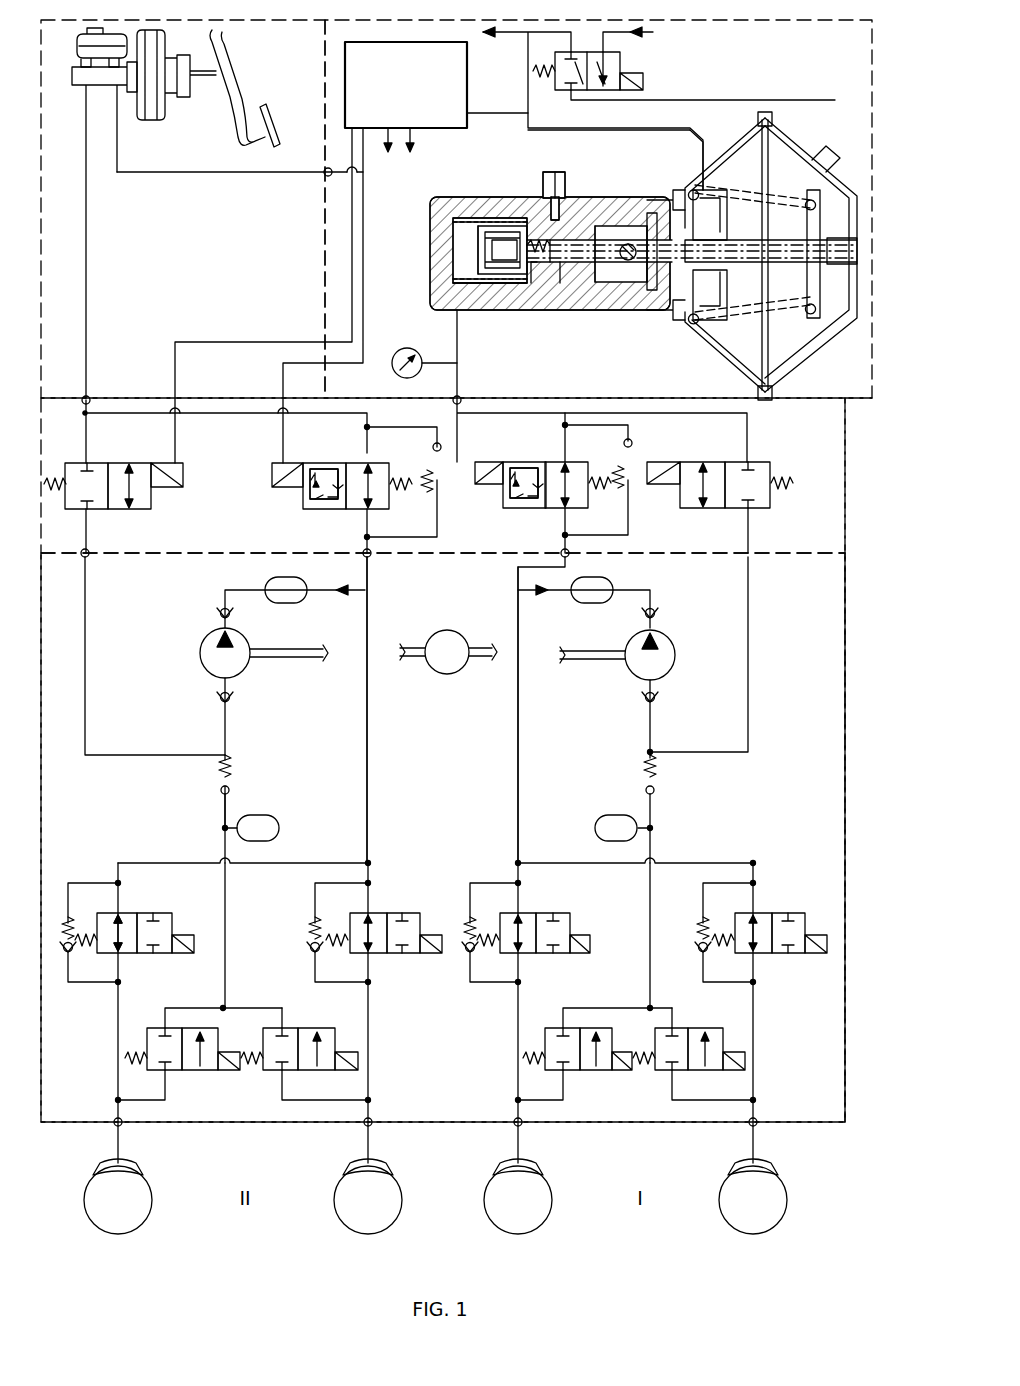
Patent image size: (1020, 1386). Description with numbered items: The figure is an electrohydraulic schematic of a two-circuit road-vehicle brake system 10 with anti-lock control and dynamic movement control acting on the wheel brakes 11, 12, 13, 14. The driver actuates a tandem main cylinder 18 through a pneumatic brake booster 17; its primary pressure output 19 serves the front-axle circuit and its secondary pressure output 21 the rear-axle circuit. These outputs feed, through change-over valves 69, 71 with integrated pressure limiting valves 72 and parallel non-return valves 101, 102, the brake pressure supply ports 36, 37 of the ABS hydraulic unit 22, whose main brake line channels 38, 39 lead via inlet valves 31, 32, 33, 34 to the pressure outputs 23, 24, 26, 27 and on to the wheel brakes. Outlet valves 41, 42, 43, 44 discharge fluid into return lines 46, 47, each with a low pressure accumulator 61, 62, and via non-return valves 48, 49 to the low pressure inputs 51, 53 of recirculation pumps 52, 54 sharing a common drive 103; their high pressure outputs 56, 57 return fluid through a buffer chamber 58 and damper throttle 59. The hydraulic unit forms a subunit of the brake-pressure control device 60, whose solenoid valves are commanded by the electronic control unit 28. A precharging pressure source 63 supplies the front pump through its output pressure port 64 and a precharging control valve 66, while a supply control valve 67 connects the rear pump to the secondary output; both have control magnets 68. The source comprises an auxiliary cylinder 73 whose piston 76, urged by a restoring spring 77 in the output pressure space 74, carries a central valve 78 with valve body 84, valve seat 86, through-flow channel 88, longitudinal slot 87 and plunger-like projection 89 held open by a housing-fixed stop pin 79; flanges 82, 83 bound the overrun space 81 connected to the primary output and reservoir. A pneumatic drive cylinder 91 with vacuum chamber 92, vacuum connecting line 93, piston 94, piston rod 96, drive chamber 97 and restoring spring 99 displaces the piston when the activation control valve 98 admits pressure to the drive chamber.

The hydraulic two-circuit brake system 10 is at (108, 1139).
The wheel brake 11 is at (542, 1204).
The wheel brake 12 is at (778, 1204).
The wheel brake 13 is at (150, 1206).
The wheel brake 14 is at (386, 1206).
The pneumatic brake booster 17 is at (167, 120).
The tandem main cylinder 18 is at (75, 88).
The primary pressure output 19 is at (324, 176).
The secondary pressure output 21 is at (76, 398).
The hydraulic unit 22 is at (832, 747).
The pressure output 23 is at (524, 1124).
The pressure output 24 is at (750, 1124).
The pressure output 26 is at (123, 1126).
The pressure output 27 is at (365, 1124).
The electronic control unit 28 is at (345, 78).
The inlet valve 31 is at (562, 914).
The inlet valve 32 is at (783, 912).
The inlet valve 33 is at (168, 914).
The inlet valve 34 is at (402, 912).
The brake pressure supply port 36 is at (582, 558).
The brake pressure supply port 37 is at (362, 558).
The main brake line channel 38 is at (518, 704).
The main brake line channel 39 is at (367, 704).
The outlet valve 41 is at (599, 1032).
The outlet valve 42 is at (710, 1038).
The outlet valve 43 is at (152, 1032).
The outlet valve 44 is at (323, 1032).
The return line 46 is at (650, 934).
The return line 47 is at (226, 921).
The non-return valve 48 is at (654, 782).
The non-return valve 49 is at (230, 778).
The low pressure input 51 is at (651, 752).
The recirculation pump 52 is at (664, 655).
The low pressure input 53 is at (223, 754).
The recirculation pump 54 is at (200, 660).
The high pressure output 56 is at (660, 590).
The high pressure output 57 is at (228, 589).
The buffer chamber 58 is at (296, 594).
The damper throttle 59 is at (342, 592).
The brake-pressure control device 60 is at (845, 398).
The low pressure accumulator 61 is at (616, 816).
The low pressure accumulator 62 is at (268, 818).
The precharging pressure source 63 is at (343, 245).
The output pressure port 64 is at (457, 396).
The precharging control valve 66 is at (770, 462).
The supply control valve 67 is at (150, 502).
The control magnet 68 is at (76, 34).
The change-over valve 69 is at (586, 471).
The change-over valve 71 is at (383, 478).
The pressure limiting valve 72 is at (324, 468).
The auxiliary cylinder 73 is at (615, 248).
The output pressure space 74 is at (454, 234).
The cylinder piston 76 is at (601, 193).
The restoring spring 77 is at (486, 208).
The central valve 78 is at (490, 252).
The stop pin 79 is at (624, 262).
The overrun space 81 is at (637, 280).
The flange 82 is at (530, 284).
The flange 83 is at (656, 290).
The valve body 84 is at (531, 222).
The valve seat 86 is at (500, 284).
The longitudinal slot 87 is at (688, 190).
The through-flow channel 88 is at (566, 282).
The plunger-like projection 89 is at (555, 198).
The pneumatic drive cylinder 91 is at (742, 256).
The vacuum chamber 92 is at (736, 358).
The vacuum connecting line 93 is at (590, 132).
The piston 94 is at (772, 279).
The piston rod 96 is at (752, 246).
The drive chamber 97 is at (816, 338).
The activation control valve 98 is at (629, 60).
The restoring spring 99 is at (718, 184).
The non-return valve 101 is at (632, 480).
The non-return valve 102 is at (444, 465).
The common drive 103 is at (450, 630).